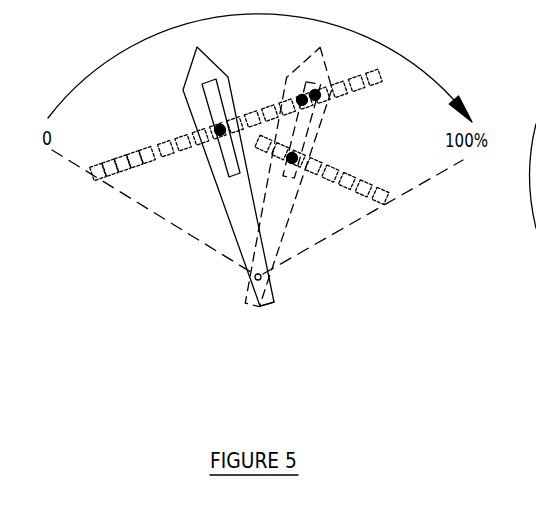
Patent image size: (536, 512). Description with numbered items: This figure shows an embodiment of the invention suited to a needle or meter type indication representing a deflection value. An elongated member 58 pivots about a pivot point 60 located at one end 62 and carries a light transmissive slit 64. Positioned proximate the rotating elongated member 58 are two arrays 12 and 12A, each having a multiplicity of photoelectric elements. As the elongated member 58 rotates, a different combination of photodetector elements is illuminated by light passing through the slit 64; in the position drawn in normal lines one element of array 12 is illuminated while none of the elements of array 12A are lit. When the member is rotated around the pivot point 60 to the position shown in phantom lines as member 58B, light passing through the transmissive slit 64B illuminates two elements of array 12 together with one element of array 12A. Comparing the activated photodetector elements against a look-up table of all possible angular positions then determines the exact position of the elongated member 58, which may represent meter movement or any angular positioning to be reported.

The array of photoelectric elements 12 is at (121, 166).
The array of photoelectric elements 12A is at (348, 172).
The elongated member 58 is at (226, 207).
The elongated member in phantom position 58B is at (289, 212).
The pivot point 60 is at (254, 280).
The end of elongated member 62 is at (273, 305).
The light transmissive slit 64 is at (203, 84).
The transmissive slit in phantom position 64B is at (313, 82).